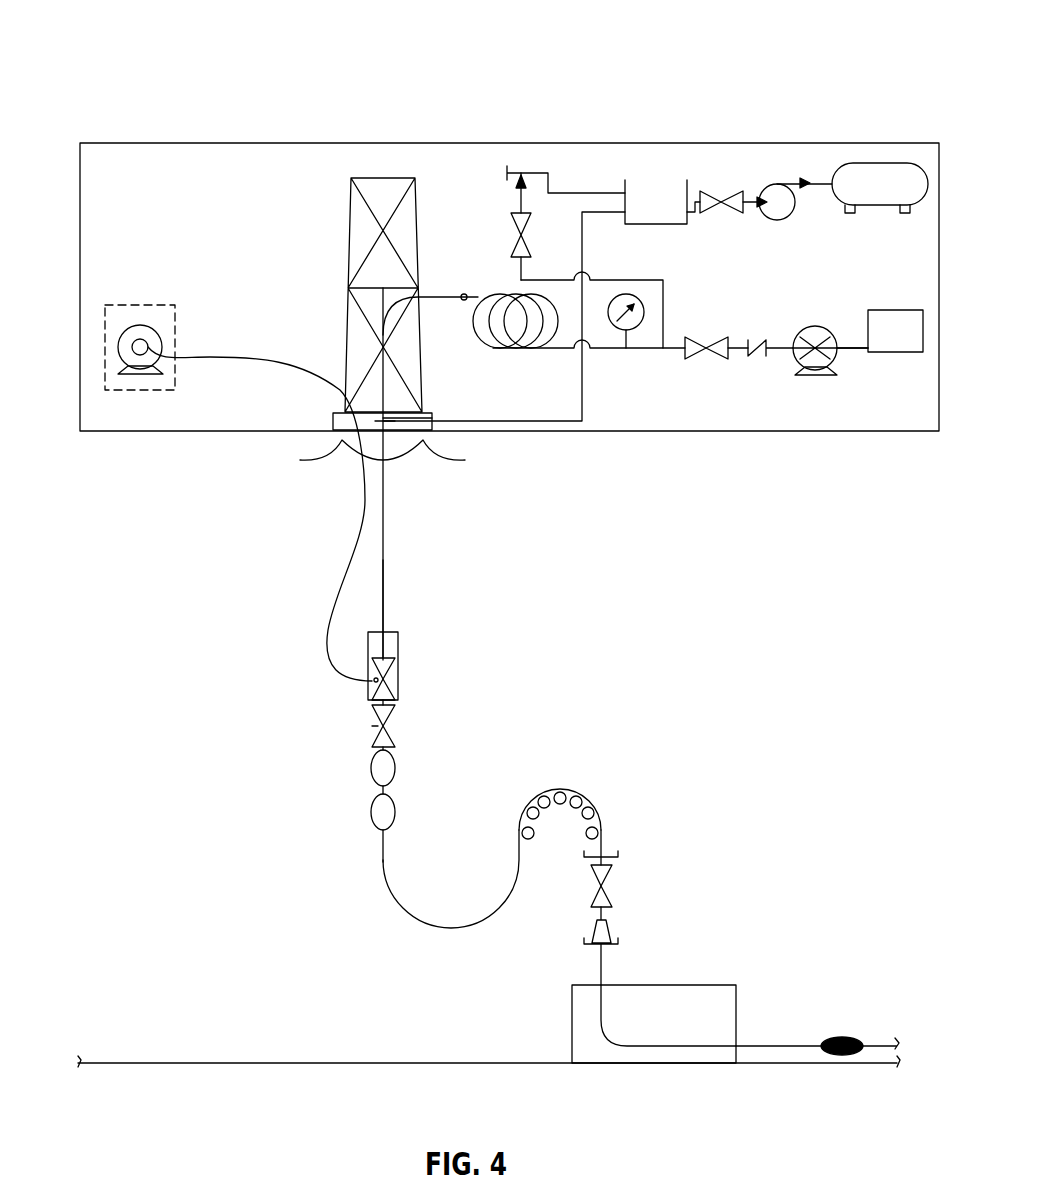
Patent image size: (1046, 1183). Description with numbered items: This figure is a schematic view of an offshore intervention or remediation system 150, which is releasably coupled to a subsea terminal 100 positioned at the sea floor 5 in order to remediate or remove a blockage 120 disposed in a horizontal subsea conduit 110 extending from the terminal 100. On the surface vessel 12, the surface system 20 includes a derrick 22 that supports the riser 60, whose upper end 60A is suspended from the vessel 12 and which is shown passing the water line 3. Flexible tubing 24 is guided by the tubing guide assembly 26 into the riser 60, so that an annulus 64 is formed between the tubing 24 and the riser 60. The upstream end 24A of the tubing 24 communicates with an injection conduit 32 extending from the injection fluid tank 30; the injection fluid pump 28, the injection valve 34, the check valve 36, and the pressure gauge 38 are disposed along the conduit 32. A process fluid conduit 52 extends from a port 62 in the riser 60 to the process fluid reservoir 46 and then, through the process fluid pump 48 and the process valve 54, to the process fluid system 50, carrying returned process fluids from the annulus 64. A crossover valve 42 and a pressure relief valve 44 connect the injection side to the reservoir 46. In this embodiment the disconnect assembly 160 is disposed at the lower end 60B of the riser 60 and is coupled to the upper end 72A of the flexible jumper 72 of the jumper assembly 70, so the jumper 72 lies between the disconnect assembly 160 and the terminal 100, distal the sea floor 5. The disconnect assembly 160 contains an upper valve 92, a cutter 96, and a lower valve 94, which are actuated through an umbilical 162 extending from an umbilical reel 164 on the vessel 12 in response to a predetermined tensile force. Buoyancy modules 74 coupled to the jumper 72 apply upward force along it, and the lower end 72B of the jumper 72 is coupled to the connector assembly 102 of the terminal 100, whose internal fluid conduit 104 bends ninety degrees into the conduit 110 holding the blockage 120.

The offshore intervention or remediation system 150 is at (150, 33).
The surface system 20 is at (587, 112).
The surface vessel 12 is at (887, 432).
The derrick 22 is at (366, 180).
The flexible tubing 24 is at (443, 299).
The upstream end of flexible tubing 24A is at (462, 294).
The tubing guide assembly 26 is at (493, 350).
The pressure sensor or gauge 38 is at (630, 321).
The crossover valve 42 is at (512, 213).
The pressure relief valve 44 is at (534, 172).
The process fluid reservoir 46 is at (655, 190).
The process fluid conduit 52 is at (583, 257).
The process valve 54 is at (712, 210).
The process fluid pump 48 is at (780, 218).
The process fluid system 50 is at (883, 198).
The injection valve 34 is at (698, 358).
The check valve 36 is at (753, 356).
The injection fluid pump 28 is at (820, 376).
The injection fluid tank 30 is at (890, 342).
The injection conduit 32 is at (845, 346).
The umbilical reel 164 is at (123, 338).
The umbilical 162 is at (347, 567).
The water line 3 is at (455, 458).
The riser 60 is at (385, 530).
The upper end of riser 60A is at (395, 421).
The lower end of riser 60B is at (381, 656).
The port 62 is at (386, 422).
The annulus 64 is at (385, 583).
The disconnect assembly 160 is at (400, 668).
The upper valve 92 is at (384, 698).
The cutter 96 is at (372, 706).
The lower valve 94 is at (372, 742).
The upper end of flexible jumper 72A is at (395, 748).
The buoyancy modules 74 is at (377, 775).
The jumper assembly 70 is at (386, 850).
The flexible jumper 72 is at (395, 907).
The lower end of flexible jumper 72B is at (605, 855).
The connector assembly 102 is at (611, 878).
The subsea terminal 100 is at (688, 985).
The internal fluid conduit 104 is at (660, 1048).
The subsea conduit 110 is at (765, 1045).
The blockage 120 is at (850, 1037).
The sea floor 5 is at (190, 1062).